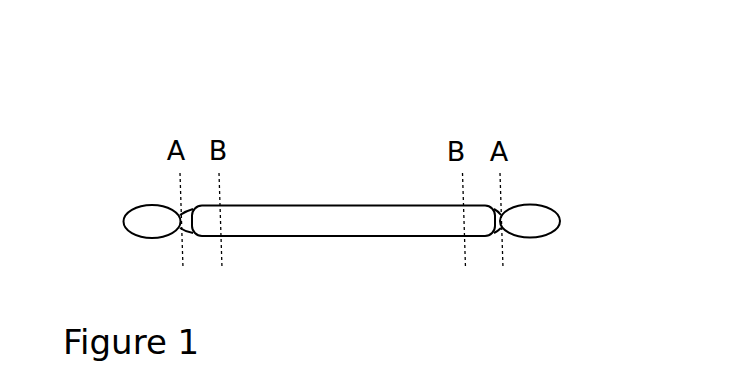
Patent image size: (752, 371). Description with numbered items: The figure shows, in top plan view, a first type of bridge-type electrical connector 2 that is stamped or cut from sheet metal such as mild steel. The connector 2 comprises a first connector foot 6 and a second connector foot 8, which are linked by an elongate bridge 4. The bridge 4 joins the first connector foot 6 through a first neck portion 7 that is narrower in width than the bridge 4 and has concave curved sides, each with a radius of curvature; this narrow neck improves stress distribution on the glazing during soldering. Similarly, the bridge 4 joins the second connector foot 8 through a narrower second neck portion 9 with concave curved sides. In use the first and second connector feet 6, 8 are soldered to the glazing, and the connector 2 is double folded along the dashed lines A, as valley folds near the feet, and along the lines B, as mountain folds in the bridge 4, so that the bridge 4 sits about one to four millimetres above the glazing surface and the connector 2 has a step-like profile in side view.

The bridge-type electrical connector 2 is at (448, 77).
The bridge 4 is at (277, 205).
The first connector foot 6 is at (130, 207).
The first neck portion 7 is at (188, 228).
The second connector foot 8 is at (558, 212).
The second neck portion 9 is at (498, 228).